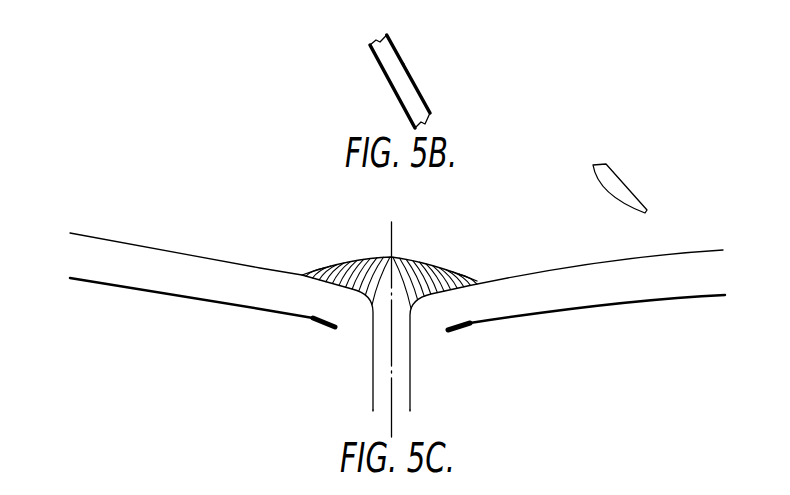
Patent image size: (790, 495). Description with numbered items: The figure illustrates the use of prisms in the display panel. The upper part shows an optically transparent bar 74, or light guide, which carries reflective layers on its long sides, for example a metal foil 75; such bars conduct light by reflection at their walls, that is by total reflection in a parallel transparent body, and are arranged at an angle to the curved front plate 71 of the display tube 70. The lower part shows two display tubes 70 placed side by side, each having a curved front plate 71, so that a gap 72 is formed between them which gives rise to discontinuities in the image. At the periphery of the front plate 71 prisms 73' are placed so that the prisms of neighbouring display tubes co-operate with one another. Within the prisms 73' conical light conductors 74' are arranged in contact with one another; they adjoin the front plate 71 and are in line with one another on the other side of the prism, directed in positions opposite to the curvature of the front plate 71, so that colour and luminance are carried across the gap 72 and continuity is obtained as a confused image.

In FIG. 5C, the display tube screen 70 is at (218, 305).
In FIG. 5C, the curved front plate 71 is at (215, 257).
In FIG. 5C, the gap 72 is at (402, 411).
In FIG. 5C, the prism 73' is at (389, 265).
In FIG. 5B, the optically transparent bar 74 is at (422, 81).
In FIG. 5C, the conical light conductor 74' is at (640, 178).
In FIG. 5B, the metal foil 75 is at (404, 63).